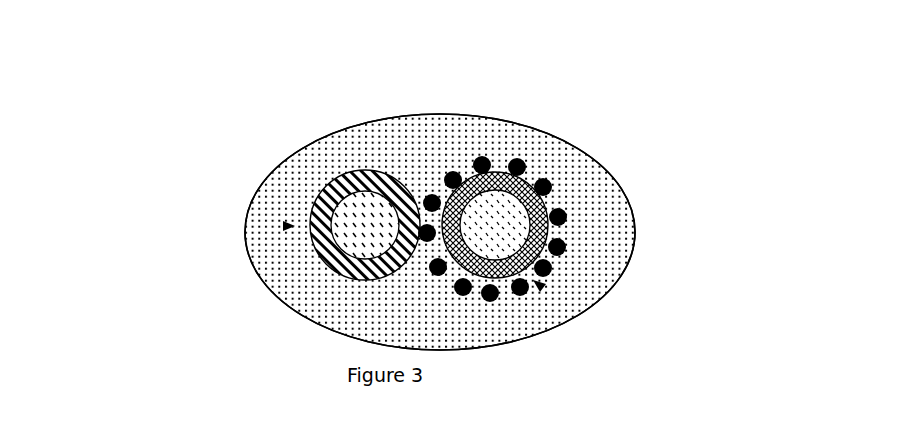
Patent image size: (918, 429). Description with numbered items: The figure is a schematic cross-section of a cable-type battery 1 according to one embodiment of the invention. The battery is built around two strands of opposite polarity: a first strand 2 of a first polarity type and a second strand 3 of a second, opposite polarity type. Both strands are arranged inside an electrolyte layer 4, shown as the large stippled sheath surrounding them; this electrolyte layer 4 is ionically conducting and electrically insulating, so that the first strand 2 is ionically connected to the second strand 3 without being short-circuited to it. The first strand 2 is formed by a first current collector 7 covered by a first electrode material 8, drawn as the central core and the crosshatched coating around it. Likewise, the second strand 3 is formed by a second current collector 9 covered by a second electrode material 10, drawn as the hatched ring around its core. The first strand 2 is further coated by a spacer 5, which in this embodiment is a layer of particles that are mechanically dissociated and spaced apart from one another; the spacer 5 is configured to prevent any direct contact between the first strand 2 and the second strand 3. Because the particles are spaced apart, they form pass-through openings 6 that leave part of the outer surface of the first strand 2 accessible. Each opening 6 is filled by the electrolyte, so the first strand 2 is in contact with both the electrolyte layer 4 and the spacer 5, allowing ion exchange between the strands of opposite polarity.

The cable-type battery 1 is at (328, 72).
The first strand 2 is at (582, 225).
The second strand 3 is at (285, 226).
The electrolyte layer 4 is at (353, 140).
The spacer 5 is at (563, 247).
The pass-through opening 6 is at (540, 287).
The first current collector 7 is at (510, 218).
The first electrode material 8 is at (502, 172).
The second current collector 9 is at (333, 243).
The second electrode material 10 is at (360, 263).